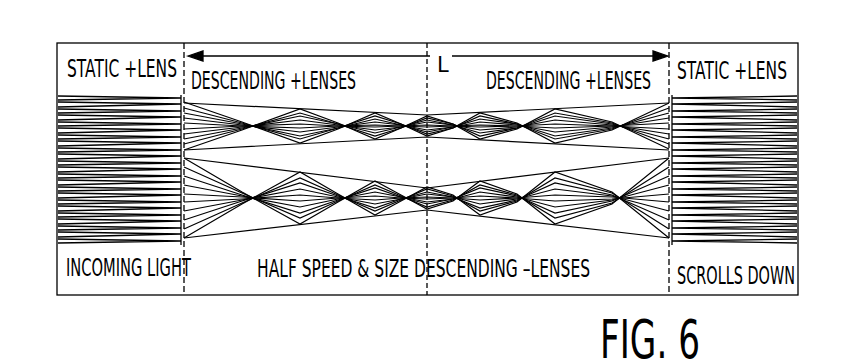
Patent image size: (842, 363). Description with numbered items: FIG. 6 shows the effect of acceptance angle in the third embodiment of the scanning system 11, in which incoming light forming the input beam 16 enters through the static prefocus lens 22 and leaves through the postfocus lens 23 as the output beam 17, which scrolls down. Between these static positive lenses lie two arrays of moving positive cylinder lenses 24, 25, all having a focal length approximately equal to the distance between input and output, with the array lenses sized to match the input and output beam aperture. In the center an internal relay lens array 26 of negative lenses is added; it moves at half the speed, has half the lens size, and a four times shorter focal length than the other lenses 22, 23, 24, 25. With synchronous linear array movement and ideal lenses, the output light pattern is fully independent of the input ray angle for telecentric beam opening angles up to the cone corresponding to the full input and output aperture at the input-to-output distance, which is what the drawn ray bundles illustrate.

The optical scanning arrangement 11 is at (63, 95).
The input beam aperture 16 is at (43, 90).
The output beam aperture 17 is at (805, 90).
The static prefocus lens 22 is at (181, 237).
The postfocus lens 23 is at (690, 258).
The array of moving lenses 24 is at (187, 248).
The array of moving lenses 25 is at (680, 258).
The internal relay lens array 26 is at (428, 238).